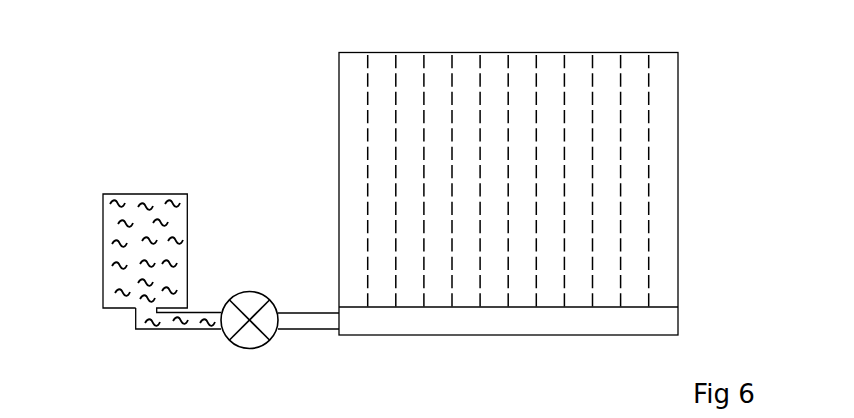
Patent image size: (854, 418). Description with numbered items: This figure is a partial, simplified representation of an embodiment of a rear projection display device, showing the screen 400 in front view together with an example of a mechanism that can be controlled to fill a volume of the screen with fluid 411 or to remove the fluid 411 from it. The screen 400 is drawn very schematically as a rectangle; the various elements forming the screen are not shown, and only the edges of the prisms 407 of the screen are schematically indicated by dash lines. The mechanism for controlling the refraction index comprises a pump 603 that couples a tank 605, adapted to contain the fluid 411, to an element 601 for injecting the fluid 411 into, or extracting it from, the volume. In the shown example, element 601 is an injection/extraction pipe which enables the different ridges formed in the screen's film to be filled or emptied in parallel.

The screen 400 is at (678, 173).
The prisms 407 is at (622, 112).
The fluid 411 is at (180, 227).
The injection/extraction pipe 601 is at (322, 330).
The pump 603 is at (251, 345).
The tank 605 is at (103, 252).